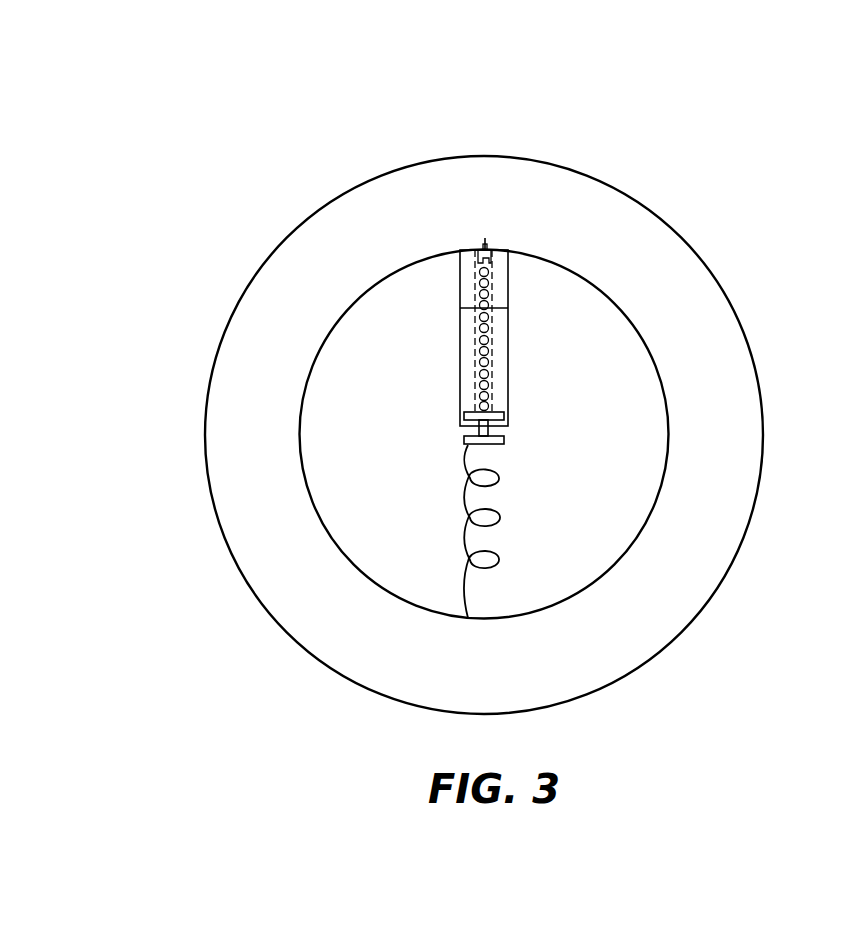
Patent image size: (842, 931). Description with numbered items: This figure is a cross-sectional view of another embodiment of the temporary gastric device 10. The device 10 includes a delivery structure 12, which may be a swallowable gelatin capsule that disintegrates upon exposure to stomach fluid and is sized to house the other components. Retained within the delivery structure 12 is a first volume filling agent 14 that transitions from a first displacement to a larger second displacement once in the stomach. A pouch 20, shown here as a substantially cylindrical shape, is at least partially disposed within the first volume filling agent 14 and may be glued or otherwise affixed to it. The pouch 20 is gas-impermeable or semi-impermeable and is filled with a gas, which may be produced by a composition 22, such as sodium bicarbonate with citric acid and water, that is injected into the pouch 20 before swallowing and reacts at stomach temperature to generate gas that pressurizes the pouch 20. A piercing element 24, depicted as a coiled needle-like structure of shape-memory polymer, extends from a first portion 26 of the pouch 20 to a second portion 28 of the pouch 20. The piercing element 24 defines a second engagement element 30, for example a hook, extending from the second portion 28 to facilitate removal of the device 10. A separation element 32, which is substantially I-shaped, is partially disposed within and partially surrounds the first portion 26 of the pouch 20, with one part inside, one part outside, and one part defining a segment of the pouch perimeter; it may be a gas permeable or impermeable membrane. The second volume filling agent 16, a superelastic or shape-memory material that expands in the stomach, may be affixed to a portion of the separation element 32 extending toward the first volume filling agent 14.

The temporary gastric device 10 is at (616, 140).
The delivery structure 12 is at (764, 392).
The first volume filling agent 14 is at (668, 451).
The second volume filling agent 16 is at (463, 537).
The pouch 20 is at (450, 308).
The composition 22 is at (500, 340).
The piercing element 24 is at (478, 360).
The first portion of the pouch 26 is at (466, 250).
The second portion of the pouch 28 is at (512, 426).
The second engagement element 30 is at (485, 237).
The separation element 32 is at (462, 442).